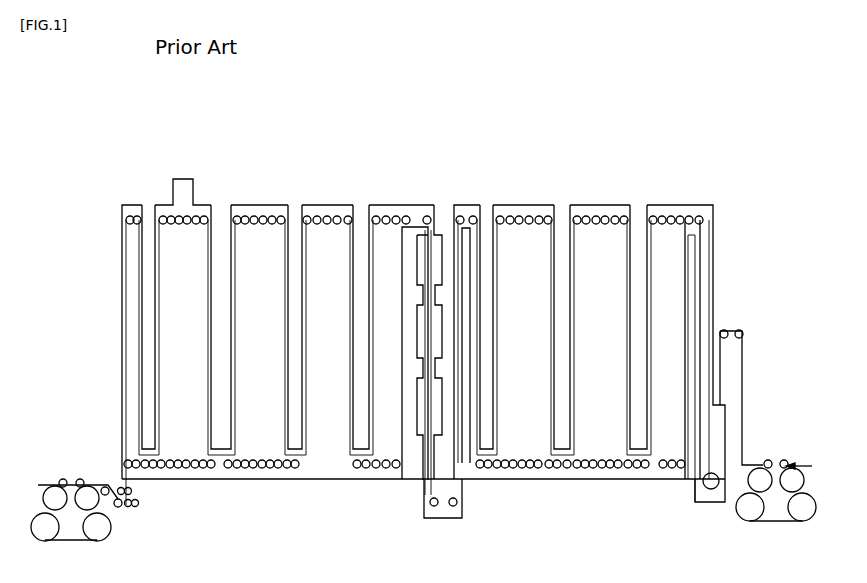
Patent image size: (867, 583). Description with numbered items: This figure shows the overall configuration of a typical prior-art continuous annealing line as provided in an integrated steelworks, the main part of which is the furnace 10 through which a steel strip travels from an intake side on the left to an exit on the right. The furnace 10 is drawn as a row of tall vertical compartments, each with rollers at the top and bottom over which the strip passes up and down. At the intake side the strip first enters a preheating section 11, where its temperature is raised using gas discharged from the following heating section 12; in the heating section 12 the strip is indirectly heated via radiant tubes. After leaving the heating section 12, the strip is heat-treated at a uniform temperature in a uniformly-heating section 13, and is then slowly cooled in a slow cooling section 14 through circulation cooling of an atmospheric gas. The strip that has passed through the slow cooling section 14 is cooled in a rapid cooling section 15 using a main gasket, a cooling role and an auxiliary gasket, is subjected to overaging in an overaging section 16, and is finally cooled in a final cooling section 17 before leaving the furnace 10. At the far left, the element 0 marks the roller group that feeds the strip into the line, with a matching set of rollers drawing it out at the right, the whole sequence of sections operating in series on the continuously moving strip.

The furnace 10 is at (447, 147).
The preheating section 11 is at (131, 205).
The heating section 12 is at (221, 215).
The uniformly-heating section 13 is at (325, 205).
The slow cooling section 14 is at (400, 205).
The rapid cooling section 15 is at (467, 205).
The overaging section 16 is at (523, 205).
The final cooling section 17 is at (680, 205).
The feed rollers 0 is at (62, 478).